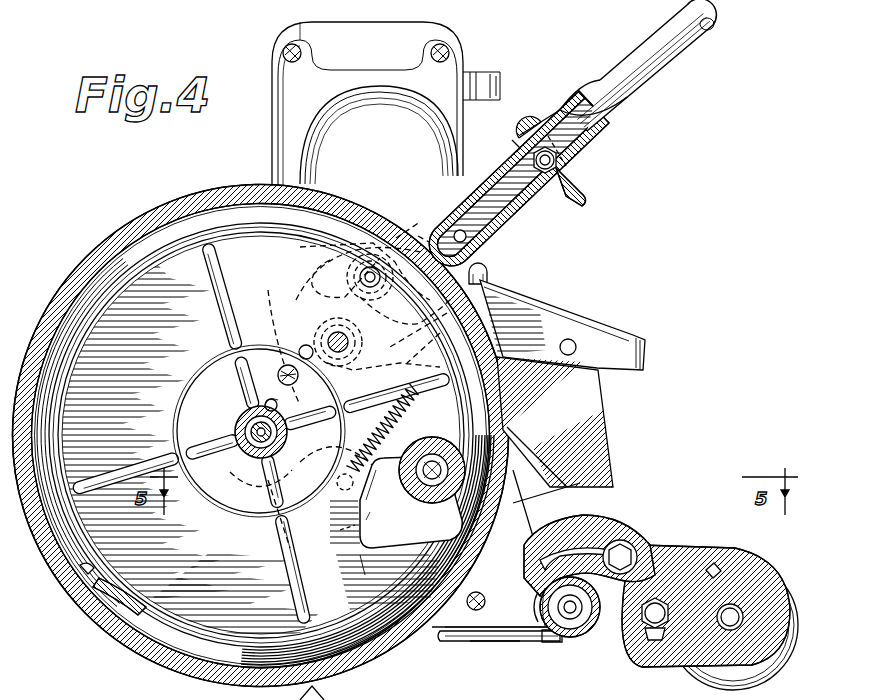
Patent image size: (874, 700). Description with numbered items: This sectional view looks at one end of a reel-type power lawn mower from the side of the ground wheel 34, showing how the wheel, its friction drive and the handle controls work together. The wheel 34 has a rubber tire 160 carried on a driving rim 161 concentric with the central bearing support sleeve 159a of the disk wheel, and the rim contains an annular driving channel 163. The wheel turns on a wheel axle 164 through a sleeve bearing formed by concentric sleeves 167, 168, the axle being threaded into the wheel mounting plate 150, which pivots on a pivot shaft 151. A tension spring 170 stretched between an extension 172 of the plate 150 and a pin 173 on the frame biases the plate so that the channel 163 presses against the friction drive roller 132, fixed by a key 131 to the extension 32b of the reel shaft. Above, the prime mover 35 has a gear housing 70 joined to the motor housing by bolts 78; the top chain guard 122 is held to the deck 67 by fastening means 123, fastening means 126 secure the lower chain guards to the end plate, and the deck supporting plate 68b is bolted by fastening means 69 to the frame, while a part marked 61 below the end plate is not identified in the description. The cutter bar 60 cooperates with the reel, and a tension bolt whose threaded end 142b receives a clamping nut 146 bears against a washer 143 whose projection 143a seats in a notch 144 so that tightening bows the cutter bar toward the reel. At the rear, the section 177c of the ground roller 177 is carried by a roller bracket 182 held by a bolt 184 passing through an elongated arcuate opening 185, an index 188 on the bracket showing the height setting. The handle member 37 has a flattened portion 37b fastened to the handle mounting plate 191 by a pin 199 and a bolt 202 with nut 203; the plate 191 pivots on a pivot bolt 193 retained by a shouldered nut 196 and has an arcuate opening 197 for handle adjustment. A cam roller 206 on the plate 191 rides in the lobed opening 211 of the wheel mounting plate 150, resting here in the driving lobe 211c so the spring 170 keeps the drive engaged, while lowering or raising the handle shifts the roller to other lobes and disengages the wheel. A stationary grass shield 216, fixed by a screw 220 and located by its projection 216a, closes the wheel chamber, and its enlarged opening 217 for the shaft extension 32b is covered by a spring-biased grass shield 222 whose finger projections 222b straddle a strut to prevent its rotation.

The ground wheel 34 is at (174, 202).
The prime mover 35 is at (413, 25).
The handle member 37 is at (670, 82).
The flattened portion of handle member 37b is at (562, 207).
The cutter bar 60 is at (458, 640).
The base strip 61 is at (508, 642).
The platform 67 is at (590, 320).
The deck supporting plate 68b is at (596, 405).
The fastening means 69 is at (602, 468).
The gear housing 70 is at (333, 36).
The bolts 78 is at (283, 51).
The top chain guard 122 is at (370, 120).
The fastening means 123 is at (488, 270).
The fastening means 126 is at (490, 586).
The key 131 is at (428, 505).
The friction drive roller 132 is at (388, 428).
The extension of reel shaft 32b is at (440, 454).
The threaded end of tension bolt 142b is at (566, 619).
The tension bolt washer 143 is at (592, 615).
The projection of washer 143a is at (552, 598).
The notch 144 is at (548, 610).
The clamping nut 146 is at (580, 625).
The wheel mounting plate 150 is at (278, 270).
The pivot shaft 151 is at (266, 286).
The central bearing support 159a is at (250, 412).
The rubber tire 160 is at (140, 232).
The driving rim 161 is at (85, 582).
The driving channel 163 is at (225, 652).
The wheel axle 164 is at (238, 446).
The sleeve 167 is at (250, 426).
The sleeve 168 is at (243, 434).
The tension spring 170 is at (388, 381).
The extension of wheel mounting plate 172 is at (492, 342).
The pin 173 is at (348, 492).
The ground roller 177 is at (742, 560).
The ground roller section 177c is at (775, 572).
The roller bracket 182 is at (700, 548).
The bolt 184 is at (638, 557).
The elongated arcuate opening 185 is at (600, 533).
The index 188 is at (640, 542).
The handle mounting plate 191 is at (530, 122).
The pivot bolt 193 is at (328, 340).
The shouldered nut 196 is at (312, 343).
The elongated arcuate opening 197 is at (516, 140).
The pin 199 is at (462, 230).
The bolt 202 is at (562, 146).
The nut 203 is at (556, 158).
The cam roller 206 is at (354, 277).
The lobed opening 211 is at (328, 256).
The driving lobe 211c is at (398, 216).
The grass shield 216 is at (135, 300).
The projection of grass shield 216a is at (290, 440).
The enlarged opening 217 is at (411, 502).
The screw 220 is at (288, 364).
The grass shield 222 is at (340, 522).
The finger projections 222b is at (381, 580).